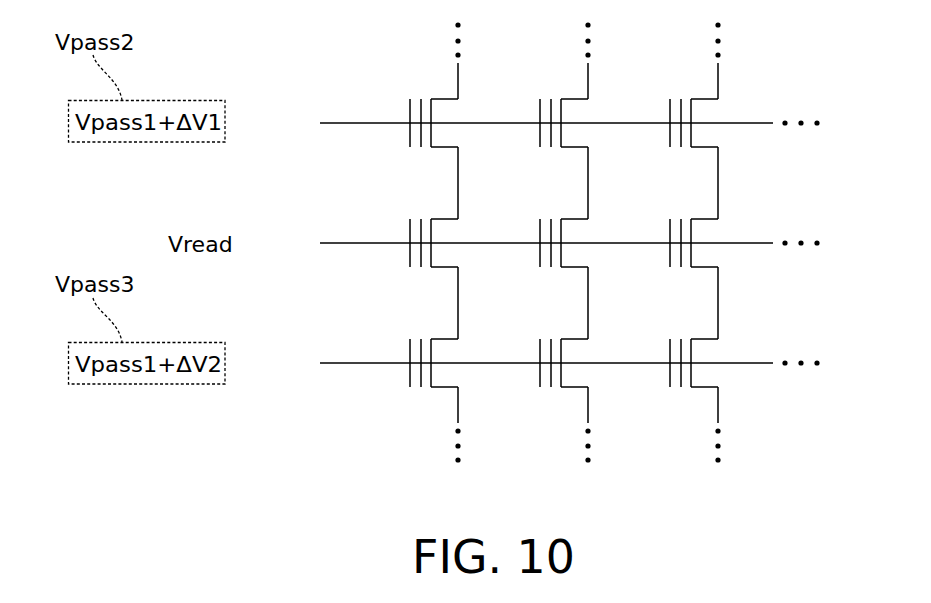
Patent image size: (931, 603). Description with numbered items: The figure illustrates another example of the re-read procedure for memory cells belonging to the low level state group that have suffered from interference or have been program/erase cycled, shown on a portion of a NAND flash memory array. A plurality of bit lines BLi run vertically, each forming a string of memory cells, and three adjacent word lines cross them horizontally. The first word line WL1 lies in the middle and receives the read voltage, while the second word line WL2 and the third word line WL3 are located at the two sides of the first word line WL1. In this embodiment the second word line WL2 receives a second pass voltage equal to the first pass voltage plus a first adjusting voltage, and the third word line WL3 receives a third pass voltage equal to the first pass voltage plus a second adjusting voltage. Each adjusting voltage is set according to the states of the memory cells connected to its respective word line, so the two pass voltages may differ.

The bit lines BLi is at (718, 80).
The first word line WL1 is at (235, 244).
The second word line WL2 is at (232, 124).
The third word line WL3 is at (232, 364).